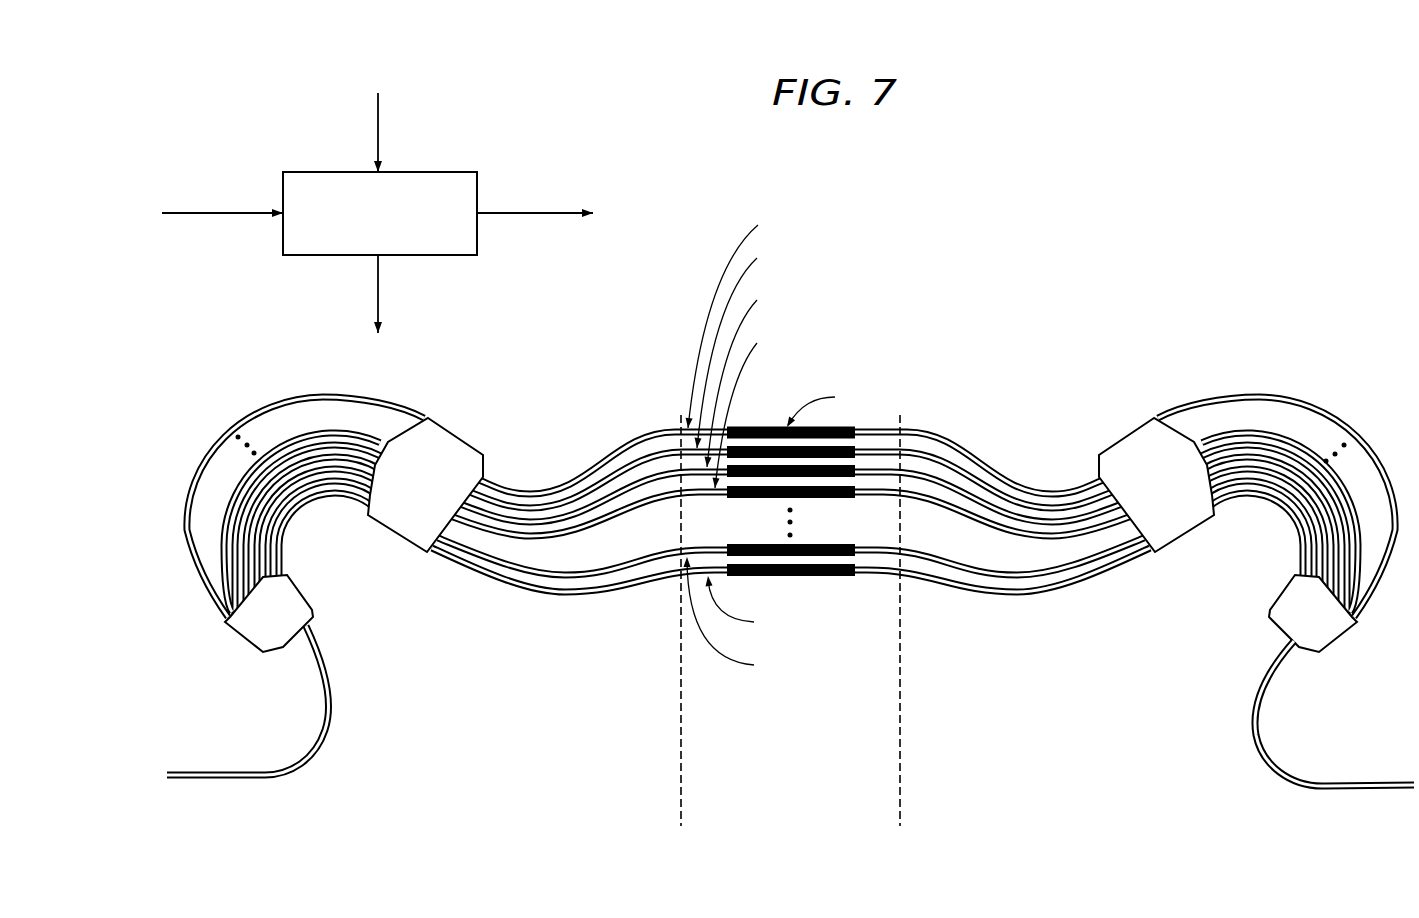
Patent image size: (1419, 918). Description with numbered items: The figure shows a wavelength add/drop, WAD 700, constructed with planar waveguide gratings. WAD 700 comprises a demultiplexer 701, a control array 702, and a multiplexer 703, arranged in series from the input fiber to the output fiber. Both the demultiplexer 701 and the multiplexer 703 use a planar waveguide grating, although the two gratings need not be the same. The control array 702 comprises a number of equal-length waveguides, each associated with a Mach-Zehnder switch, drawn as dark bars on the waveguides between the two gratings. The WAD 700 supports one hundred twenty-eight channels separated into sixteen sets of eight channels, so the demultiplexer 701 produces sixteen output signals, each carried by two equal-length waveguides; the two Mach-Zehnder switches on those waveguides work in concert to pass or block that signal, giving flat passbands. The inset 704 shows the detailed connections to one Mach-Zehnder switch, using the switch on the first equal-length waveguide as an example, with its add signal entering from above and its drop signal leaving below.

The WAD 700 is at (852, 149).
The demultiplexer 701 is at (168, 802).
The control array 702 is at (900, 802).
The multiplexer 703 is at (900, 802).
The detailed connections to a Mach-Zehnder switch 704 is at (443, 172).